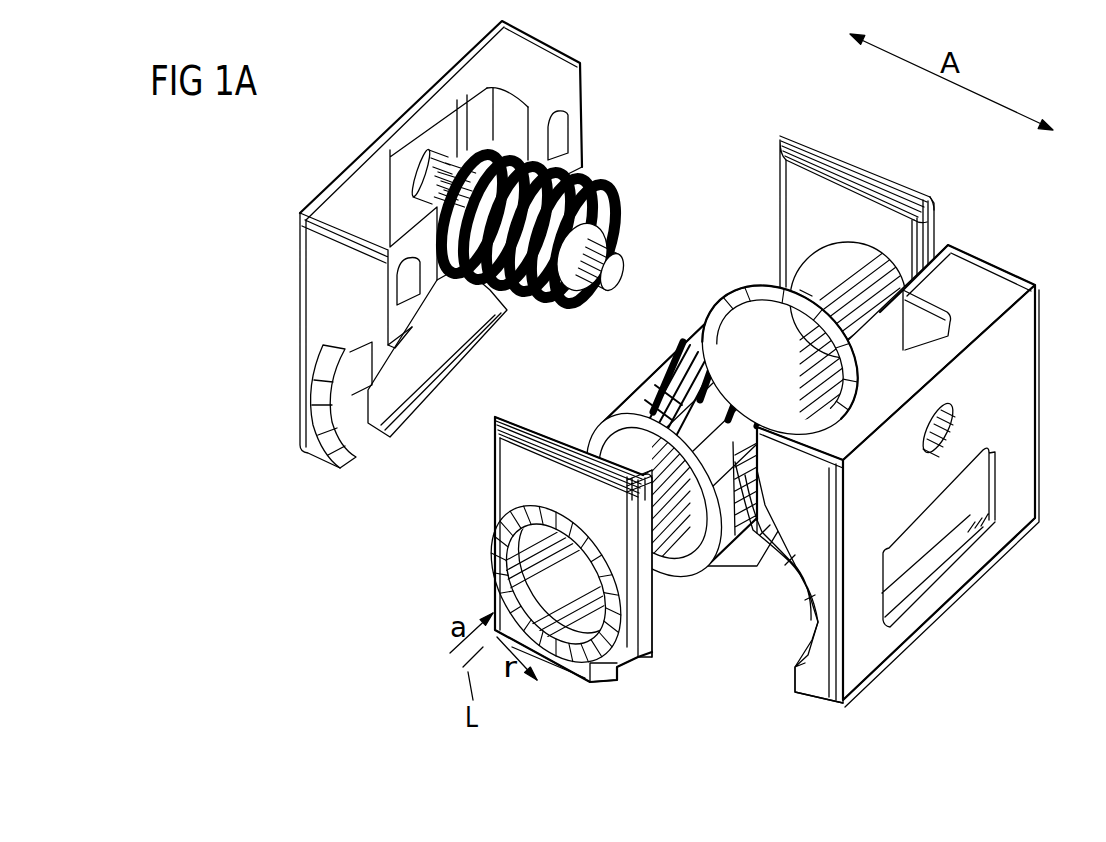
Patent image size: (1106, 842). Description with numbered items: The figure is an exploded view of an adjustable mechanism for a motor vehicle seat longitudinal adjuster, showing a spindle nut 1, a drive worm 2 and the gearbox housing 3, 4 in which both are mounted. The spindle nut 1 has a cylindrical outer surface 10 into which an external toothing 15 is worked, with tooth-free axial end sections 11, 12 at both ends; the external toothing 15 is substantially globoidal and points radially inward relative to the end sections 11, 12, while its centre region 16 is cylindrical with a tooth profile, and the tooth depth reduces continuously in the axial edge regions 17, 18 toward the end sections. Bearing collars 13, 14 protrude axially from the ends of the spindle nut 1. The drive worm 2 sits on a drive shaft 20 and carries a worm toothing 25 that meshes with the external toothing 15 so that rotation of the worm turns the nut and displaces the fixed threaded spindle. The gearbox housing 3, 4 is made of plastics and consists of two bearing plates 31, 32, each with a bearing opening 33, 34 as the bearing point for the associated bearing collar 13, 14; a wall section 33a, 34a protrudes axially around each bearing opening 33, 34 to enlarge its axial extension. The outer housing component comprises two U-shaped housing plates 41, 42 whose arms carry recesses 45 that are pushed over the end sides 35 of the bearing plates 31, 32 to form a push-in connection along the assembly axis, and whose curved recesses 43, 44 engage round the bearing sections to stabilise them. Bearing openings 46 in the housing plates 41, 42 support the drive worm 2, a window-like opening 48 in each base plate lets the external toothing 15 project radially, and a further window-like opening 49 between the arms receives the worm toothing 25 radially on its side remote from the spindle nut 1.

The spindle nut 1 is at (822, 460).
The drive worm 2 is at (551, 248).
The gearbox housing 3 is at (863, 234).
The gearbox housing 4 is at (441, 244).
The outer surface 10 is at (723, 390).
The axial end section 11 is at (650, 408).
The axial end section 12 is at (760, 300).
The bearing collar 13 is at (688, 535).
The bearing collar 14 is at (818, 290).
The external toothing 15 is at (677, 343).
The centre region 16 is at (680, 358).
The axial edge region 17 is at (737, 537).
The axial edge region 18 is at (718, 332).
The drive shaft 20 is at (620, 240).
The worm toothing 25 is at (605, 193).
The bearing plate 31 is at (511, 551).
The bearing plate 32 is at (863, 234).
The bearing opening 33 is at (573, 560).
The wall section 33a is at (487, 565).
The bearing opening 34 is at (870, 350).
The wall section 34a is at (850, 287).
The end side 35 is at (790, 147).
The housing plate 41 is at (315, 285).
The housing plate 42 is at (1018, 383).
The curved recess 43 is at (325, 392).
The curved recess 44 is at (575, 167).
The recess 45 is at (562, 138).
The bearing opening 46 is at (437, 147).
The window-like opening 48 is at (412, 327).
The window-like opening 49 is at (507, 110).